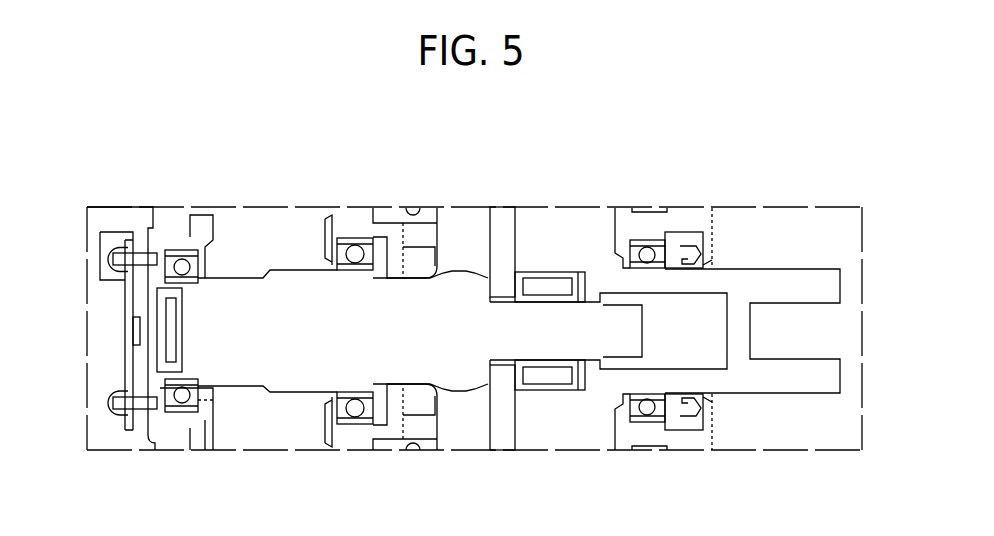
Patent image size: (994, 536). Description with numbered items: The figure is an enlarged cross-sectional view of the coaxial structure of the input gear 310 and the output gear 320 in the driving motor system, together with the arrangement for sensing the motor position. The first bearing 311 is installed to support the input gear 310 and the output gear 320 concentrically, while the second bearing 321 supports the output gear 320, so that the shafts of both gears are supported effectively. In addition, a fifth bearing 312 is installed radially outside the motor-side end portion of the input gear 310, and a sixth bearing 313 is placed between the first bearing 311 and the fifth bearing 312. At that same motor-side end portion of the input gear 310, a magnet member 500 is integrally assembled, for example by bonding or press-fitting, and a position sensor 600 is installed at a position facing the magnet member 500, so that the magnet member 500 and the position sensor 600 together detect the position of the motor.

The input gear 310 is at (280, 340).
The first bearing 311 is at (546, 285).
The fifth bearing 312 is at (182, 263).
The sixth bearing 313 is at (353, 250).
The output gear 320 is at (752, 328).
The second bearing 321 is at (648, 253).
The magnet member 500 is at (167, 353).
The position sensor 600 is at (133, 330).